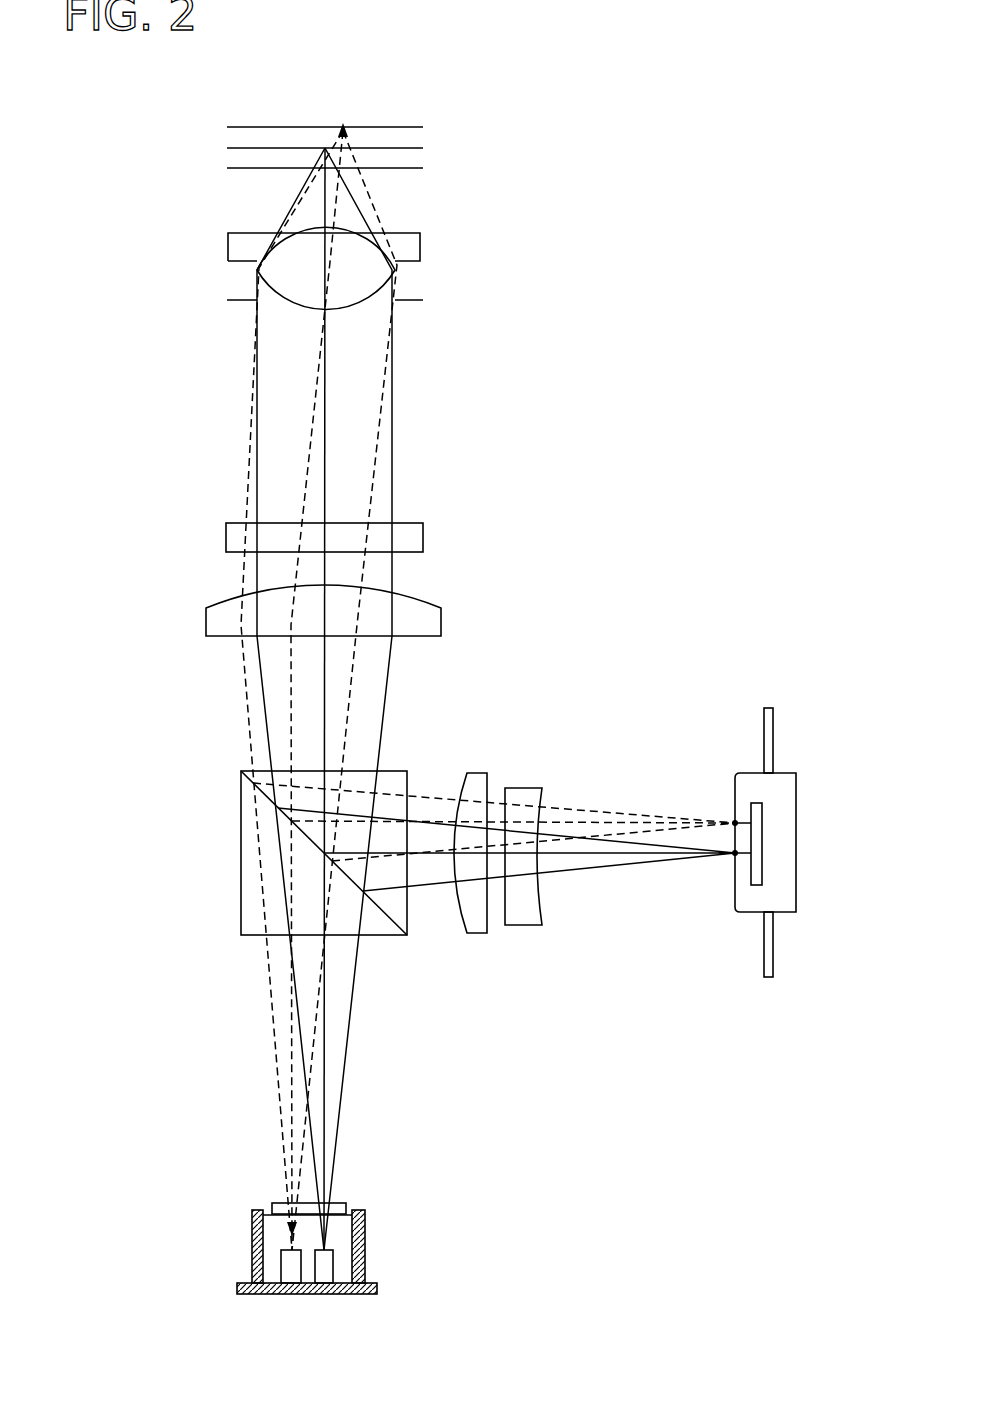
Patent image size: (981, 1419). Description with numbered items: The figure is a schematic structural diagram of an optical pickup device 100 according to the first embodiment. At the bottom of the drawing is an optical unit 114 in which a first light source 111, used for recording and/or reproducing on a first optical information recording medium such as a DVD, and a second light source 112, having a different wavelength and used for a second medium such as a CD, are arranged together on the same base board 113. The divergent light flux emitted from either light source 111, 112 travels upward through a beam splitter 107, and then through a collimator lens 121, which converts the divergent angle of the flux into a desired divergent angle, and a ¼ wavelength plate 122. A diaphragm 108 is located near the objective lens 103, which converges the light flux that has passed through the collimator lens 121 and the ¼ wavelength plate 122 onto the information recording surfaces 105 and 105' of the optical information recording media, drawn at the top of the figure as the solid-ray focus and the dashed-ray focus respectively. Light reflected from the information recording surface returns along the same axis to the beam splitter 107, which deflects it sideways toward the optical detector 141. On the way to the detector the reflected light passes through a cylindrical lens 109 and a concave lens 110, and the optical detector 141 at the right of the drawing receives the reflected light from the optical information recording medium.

The optical pickup device 100 is at (608, 268).
The objective lens 103 is at (427, 246).
The information recording surface 105 is at (336, 112).
The information recording surface 105' is at (351, 106).
The beam splitter 107 is at (393, 771).
The diaphragm 108 is at (425, 300).
The cylindrical lens 109 is at (475, 935).
The concave lens 110 is at (523, 788).
The first light source 111 is at (281, 1266).
The second light source 112 is at (333, 1266).
The base board 113 is at (308, 1294).
The optical unit 114 is at (367, 1223).
The collimator lens 121 is at (442, 623).
The ¼ wavelength plate 122 is at (425, 537).
The optical detector 141 is at (750, 778).